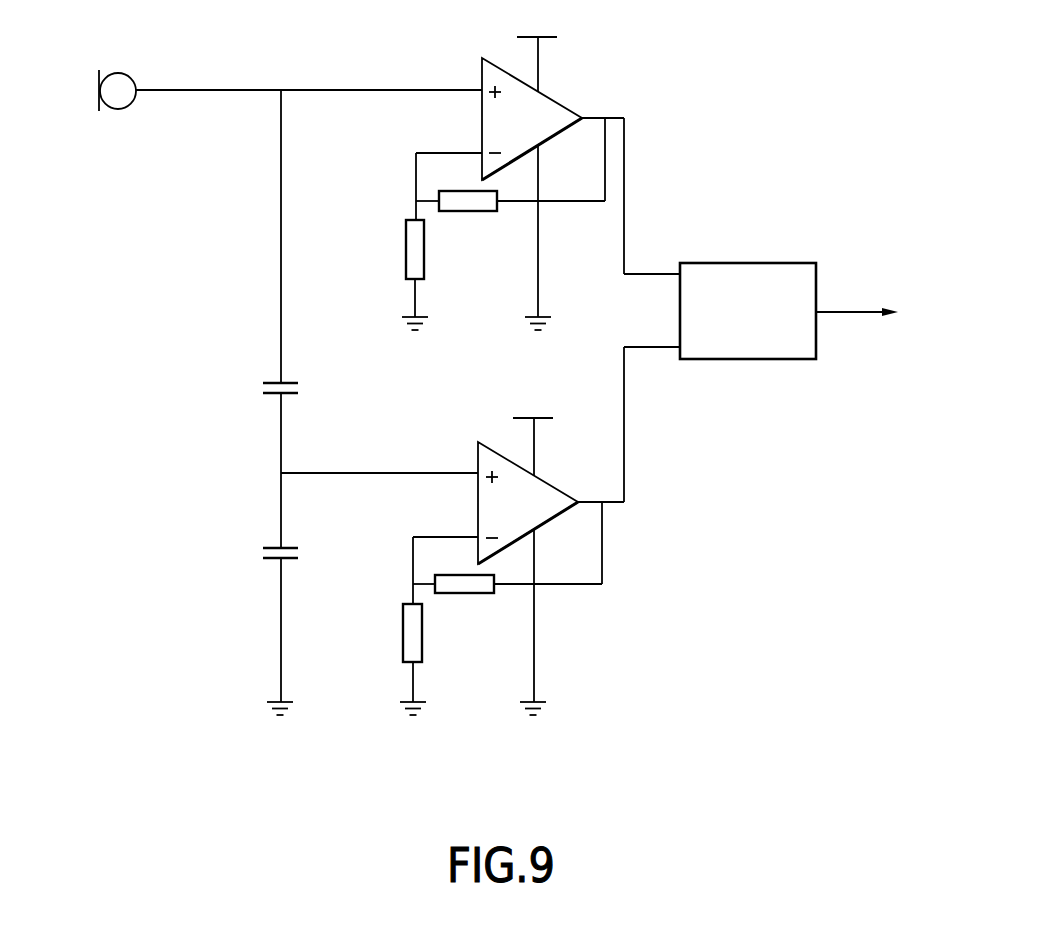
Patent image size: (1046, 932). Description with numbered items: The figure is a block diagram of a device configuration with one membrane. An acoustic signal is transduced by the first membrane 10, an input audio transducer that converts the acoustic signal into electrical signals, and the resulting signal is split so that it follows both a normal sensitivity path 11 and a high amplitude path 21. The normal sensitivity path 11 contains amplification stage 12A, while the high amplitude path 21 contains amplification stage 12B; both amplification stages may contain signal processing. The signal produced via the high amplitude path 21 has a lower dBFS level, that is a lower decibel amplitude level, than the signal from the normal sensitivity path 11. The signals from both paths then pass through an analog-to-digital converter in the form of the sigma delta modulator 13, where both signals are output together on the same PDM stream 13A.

The first membrane 10 is at (152, 110).
The normal sensitivity path 11 is at (395, 82).
The high amplitude path 21 is at (402, 466).
The amplification stage 12A is at (543, 117).
The amplification stage 12B is at (540, 502).
The sigma delta modulator 13 is at (773, 283).
The PDM stream 13A is at (858, 336).